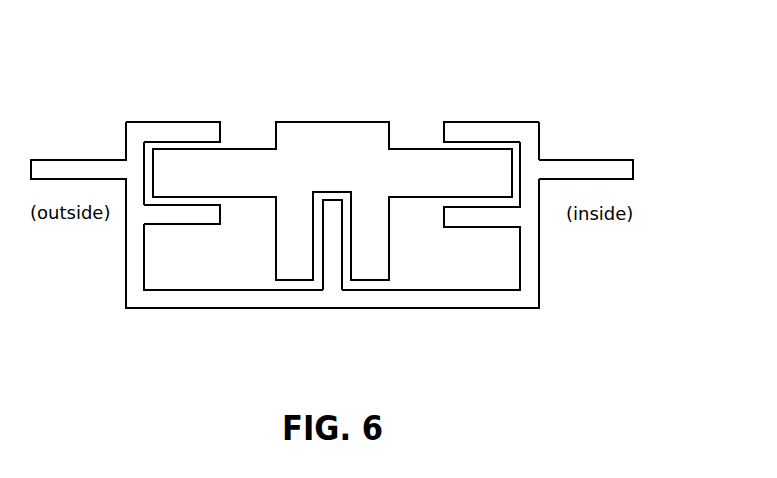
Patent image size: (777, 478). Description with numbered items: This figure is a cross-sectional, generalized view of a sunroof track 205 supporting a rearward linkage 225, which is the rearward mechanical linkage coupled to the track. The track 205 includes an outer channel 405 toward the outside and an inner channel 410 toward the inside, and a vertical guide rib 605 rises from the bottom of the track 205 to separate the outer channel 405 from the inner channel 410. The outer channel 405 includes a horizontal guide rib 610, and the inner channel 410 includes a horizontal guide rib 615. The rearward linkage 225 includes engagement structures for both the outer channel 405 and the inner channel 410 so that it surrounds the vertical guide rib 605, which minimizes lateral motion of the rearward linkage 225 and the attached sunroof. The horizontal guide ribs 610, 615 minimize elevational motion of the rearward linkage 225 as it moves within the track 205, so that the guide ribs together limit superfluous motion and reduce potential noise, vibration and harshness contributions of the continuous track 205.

The sunroof track 205 is at (377, 174).
The rearward linkage 225 is at (332, 201).
The outer channel 405 is at (150, 143).
The inner channel 410 is at (515, 145).
The vertical guide rib 605 is at (333, 271).
The horizontal guide rib 610 is at (173, 215).
The horizontal guide rib 615 is at (622, 166).